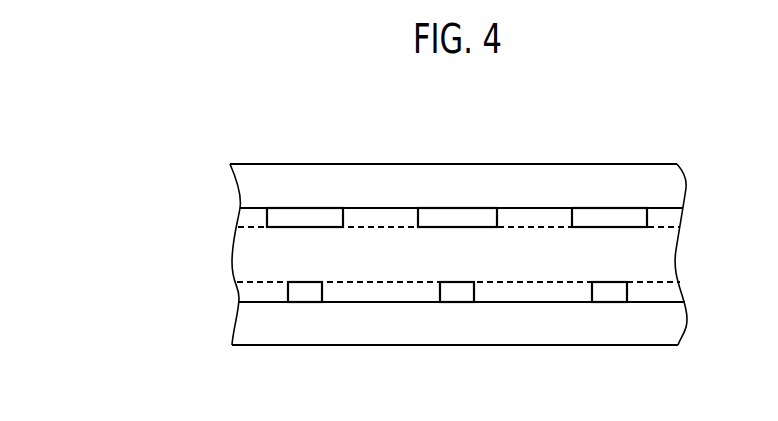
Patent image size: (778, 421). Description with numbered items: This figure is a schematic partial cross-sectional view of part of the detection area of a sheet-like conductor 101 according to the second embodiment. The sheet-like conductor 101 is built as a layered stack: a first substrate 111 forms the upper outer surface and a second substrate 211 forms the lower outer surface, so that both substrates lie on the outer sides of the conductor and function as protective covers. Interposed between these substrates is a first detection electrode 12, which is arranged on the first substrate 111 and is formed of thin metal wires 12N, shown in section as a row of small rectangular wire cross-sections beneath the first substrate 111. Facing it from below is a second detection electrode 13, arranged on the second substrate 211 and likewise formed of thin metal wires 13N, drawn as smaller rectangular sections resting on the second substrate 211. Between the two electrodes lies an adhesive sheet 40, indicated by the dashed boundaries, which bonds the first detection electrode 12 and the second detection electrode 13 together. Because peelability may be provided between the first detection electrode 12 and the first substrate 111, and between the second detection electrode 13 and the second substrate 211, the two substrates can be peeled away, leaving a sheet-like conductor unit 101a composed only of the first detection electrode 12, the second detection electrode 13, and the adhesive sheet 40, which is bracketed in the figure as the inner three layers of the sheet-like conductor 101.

The sheet-like conductor 101 is at (693, 145).
The sheet-like conductor unit 101a is at (155, 215).
The first substrate 111 is at (675, 188).
The second substrate 211 is at (672, 321).
The first detection electrode 12 is at (234, 219).
The thin metal wires 12N is at (457, 217).
The adhesive sheet 40 is at (247, 257).
The second detection electrode 13 is at (234, 292).
The thin metal wires 13N is at (458, 290).